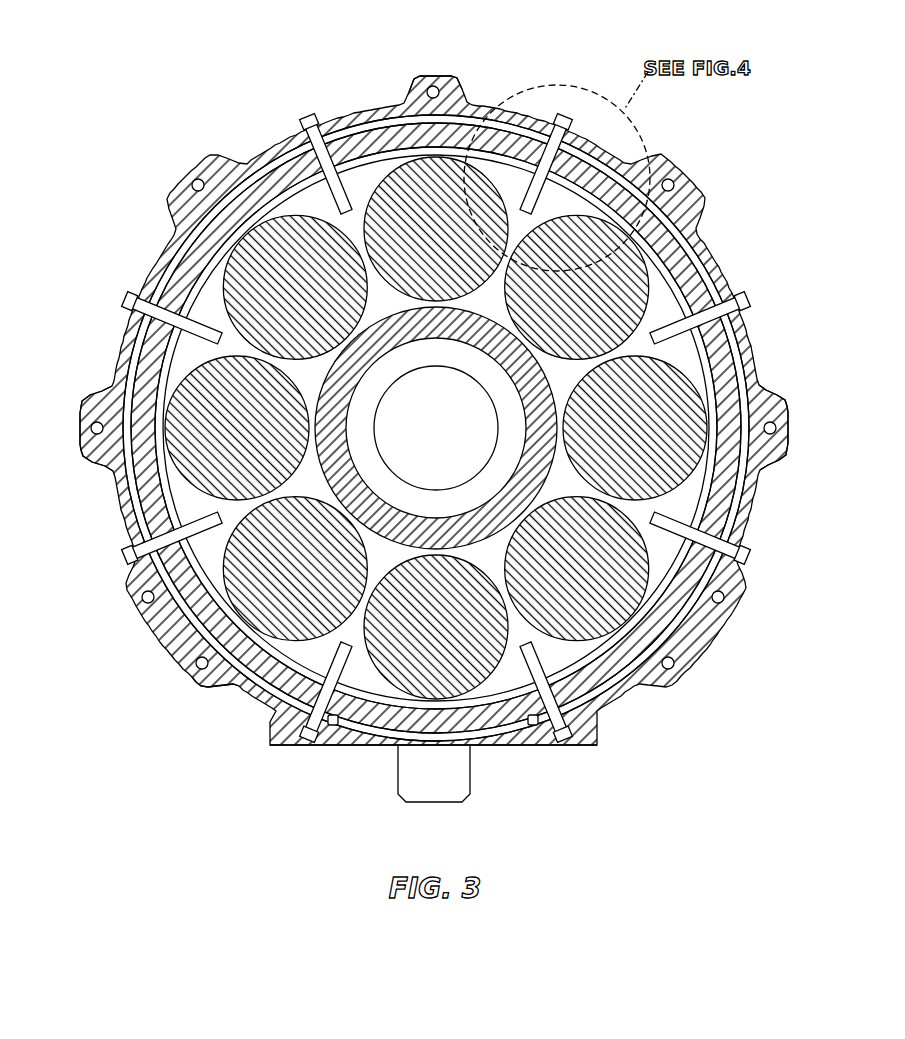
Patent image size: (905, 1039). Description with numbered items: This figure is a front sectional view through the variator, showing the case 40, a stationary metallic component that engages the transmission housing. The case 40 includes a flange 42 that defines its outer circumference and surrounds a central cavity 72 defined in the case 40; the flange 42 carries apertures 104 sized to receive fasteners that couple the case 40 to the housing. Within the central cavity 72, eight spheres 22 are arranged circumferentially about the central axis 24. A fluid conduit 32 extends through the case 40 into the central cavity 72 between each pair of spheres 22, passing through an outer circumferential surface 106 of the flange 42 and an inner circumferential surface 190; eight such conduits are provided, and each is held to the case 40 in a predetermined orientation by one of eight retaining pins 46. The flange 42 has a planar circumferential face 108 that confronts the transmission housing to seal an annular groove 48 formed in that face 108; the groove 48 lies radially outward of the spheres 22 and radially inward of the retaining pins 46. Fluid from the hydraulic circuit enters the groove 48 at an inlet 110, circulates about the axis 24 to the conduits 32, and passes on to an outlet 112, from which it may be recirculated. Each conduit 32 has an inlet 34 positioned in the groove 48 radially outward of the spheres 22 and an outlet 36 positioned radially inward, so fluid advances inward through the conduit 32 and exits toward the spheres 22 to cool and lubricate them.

The spheres 22 is at (392, 143).
The central axis 24 is at (434, 425).
The fluid conduit 32 is at (304, 118).
The inlet 34 is at (293, 150).
The outlet 36 is at (300, 172).
The case 40 is at (454, 98).
The flange 42 is at (438, 70).
The retaining pin 46 is at (350, 116).
The annular groove 48 is at (690, 236).
The central cavity 72 is at (262, 705).
The apertures 104 is at (430, 85).
The outer circumferential surface 106 is at (95, 458).
The circumferential face 108 is at (760, 385).
The inlet 110 is at (333, 748).
The outlet 112 is at (512, 732).
The inner circumferential surface 190 is at (705, 244).